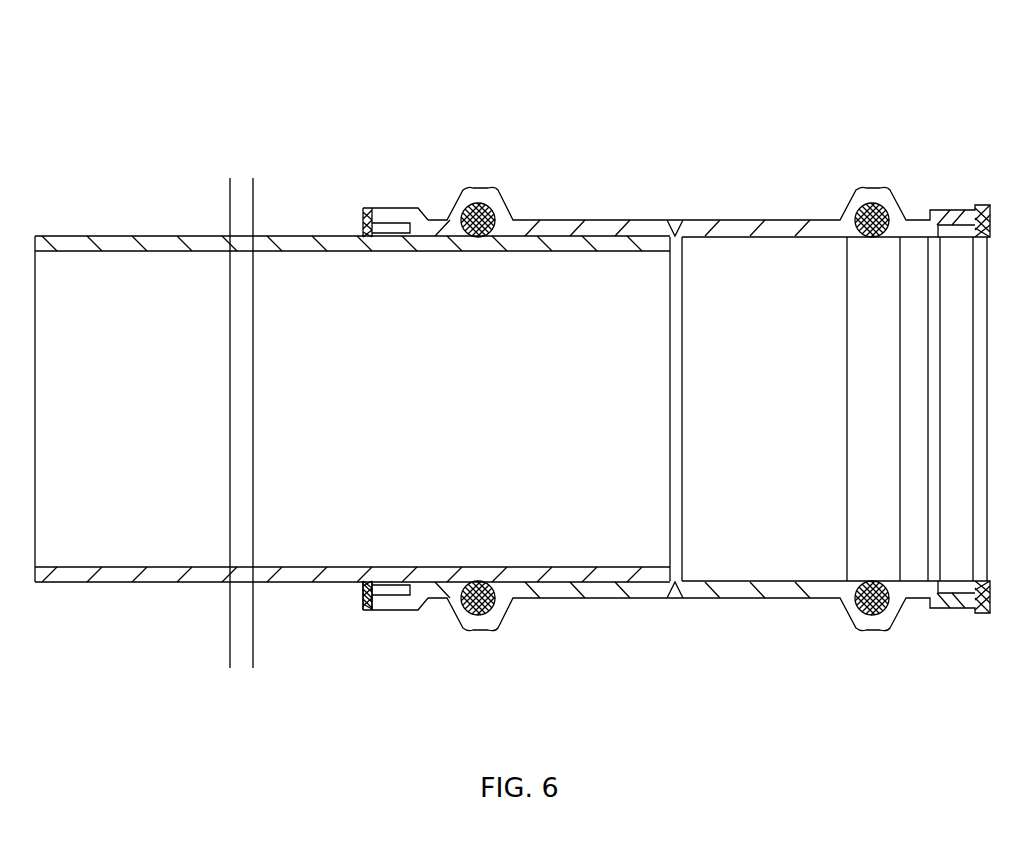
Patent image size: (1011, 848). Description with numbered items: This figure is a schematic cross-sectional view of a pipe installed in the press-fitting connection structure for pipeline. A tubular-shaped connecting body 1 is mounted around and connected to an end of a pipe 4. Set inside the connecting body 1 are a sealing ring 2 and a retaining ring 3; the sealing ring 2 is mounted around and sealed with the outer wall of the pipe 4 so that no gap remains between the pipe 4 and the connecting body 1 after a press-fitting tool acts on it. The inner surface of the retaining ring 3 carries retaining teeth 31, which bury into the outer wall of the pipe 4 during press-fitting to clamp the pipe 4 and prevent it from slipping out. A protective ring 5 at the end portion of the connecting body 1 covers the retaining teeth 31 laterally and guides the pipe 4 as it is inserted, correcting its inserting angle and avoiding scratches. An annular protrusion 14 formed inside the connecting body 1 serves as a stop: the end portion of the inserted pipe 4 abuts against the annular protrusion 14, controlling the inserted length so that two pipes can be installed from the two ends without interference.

The connecting body 1 is at (771, 316).
The sealing ring 2 is at (465, 201).
The retaining ring 3 is at (370, 209).
The retaining teeth 31 is at (383, 205).
The pipe 4 is at (413, 355).
The protective ring 5 is at (355, 611).
The annular protrusion 14 is at (665, 223).